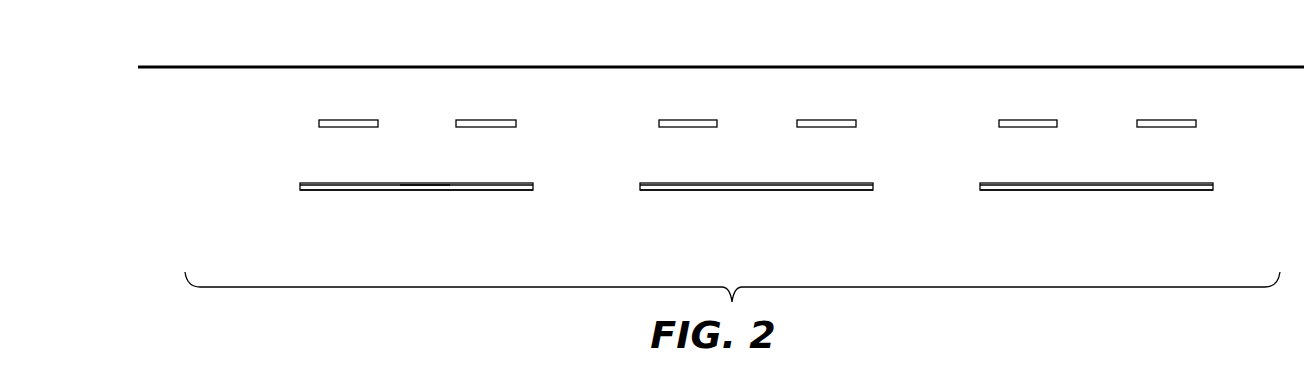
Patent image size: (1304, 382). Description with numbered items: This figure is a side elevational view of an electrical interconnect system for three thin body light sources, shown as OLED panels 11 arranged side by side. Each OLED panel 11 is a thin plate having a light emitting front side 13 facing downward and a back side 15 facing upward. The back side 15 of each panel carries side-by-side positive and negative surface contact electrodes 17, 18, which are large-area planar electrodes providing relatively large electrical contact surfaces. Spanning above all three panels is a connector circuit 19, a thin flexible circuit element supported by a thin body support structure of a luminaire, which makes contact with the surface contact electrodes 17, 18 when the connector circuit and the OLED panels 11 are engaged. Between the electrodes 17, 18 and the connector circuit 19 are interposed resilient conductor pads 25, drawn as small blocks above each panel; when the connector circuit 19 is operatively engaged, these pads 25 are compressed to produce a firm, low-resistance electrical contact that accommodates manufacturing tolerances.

The OLED panel 11 is at (485, 190).
The light emitting front side 13 is at (420, 190).
The back side 15 is at (425, 183).
The positive surface contact electrode 17 is at (350, 183).
The negative surface contact electrode 18 is at (487, 183).
The connector circuit 19 is at (586, 67).
The resilient conductor pad 25 is at (461, 119).